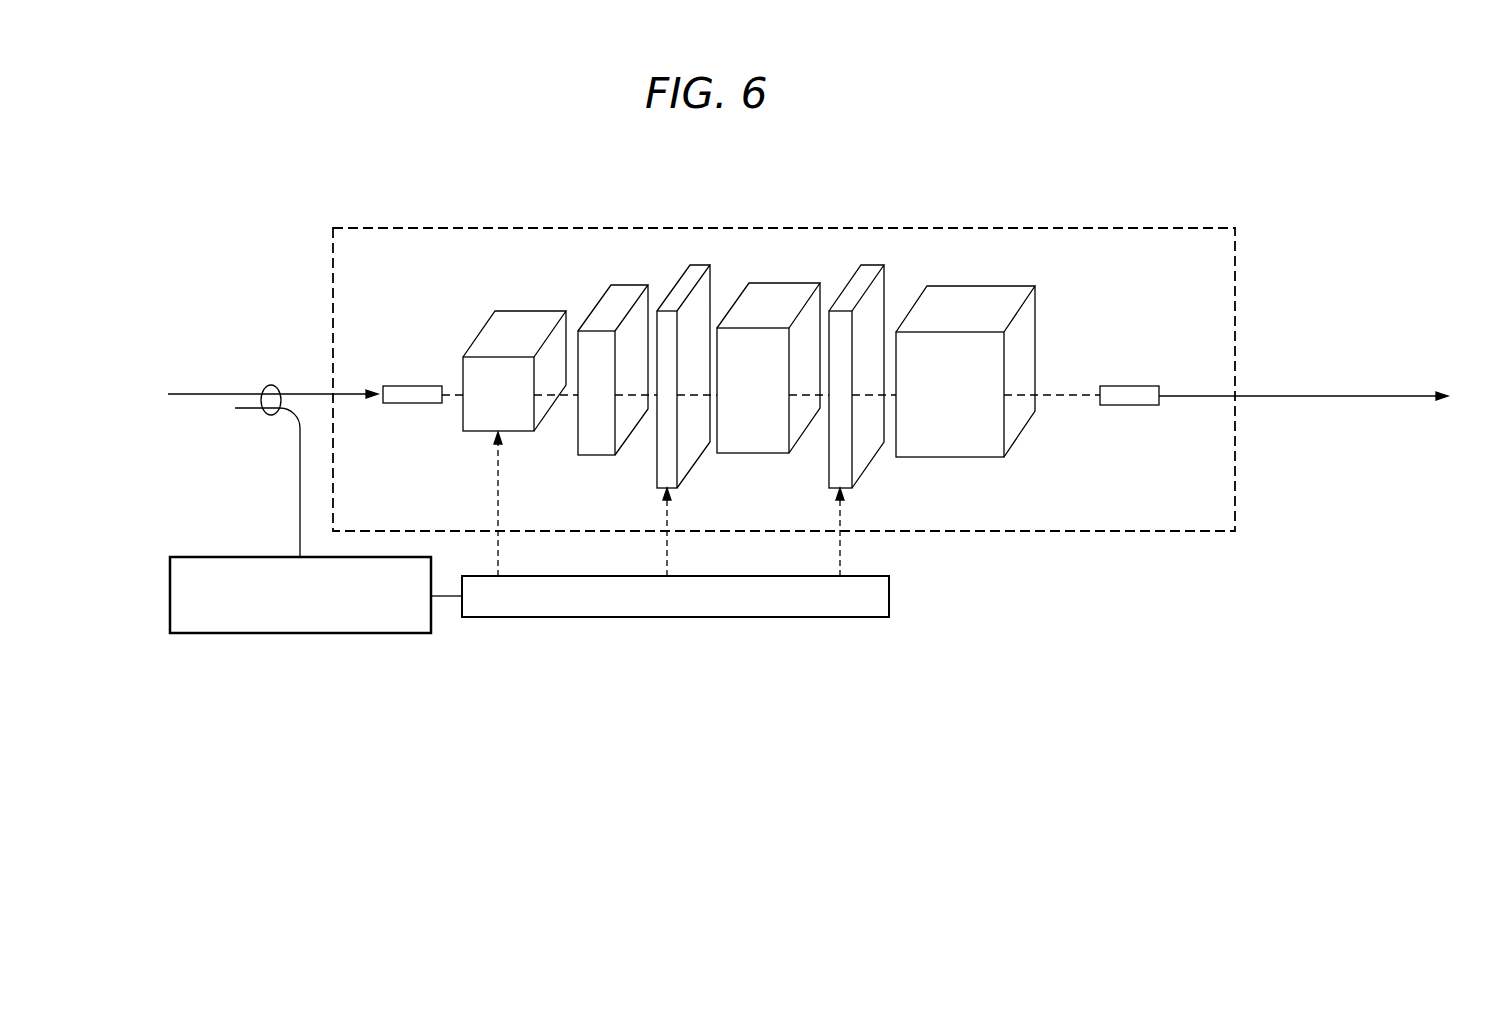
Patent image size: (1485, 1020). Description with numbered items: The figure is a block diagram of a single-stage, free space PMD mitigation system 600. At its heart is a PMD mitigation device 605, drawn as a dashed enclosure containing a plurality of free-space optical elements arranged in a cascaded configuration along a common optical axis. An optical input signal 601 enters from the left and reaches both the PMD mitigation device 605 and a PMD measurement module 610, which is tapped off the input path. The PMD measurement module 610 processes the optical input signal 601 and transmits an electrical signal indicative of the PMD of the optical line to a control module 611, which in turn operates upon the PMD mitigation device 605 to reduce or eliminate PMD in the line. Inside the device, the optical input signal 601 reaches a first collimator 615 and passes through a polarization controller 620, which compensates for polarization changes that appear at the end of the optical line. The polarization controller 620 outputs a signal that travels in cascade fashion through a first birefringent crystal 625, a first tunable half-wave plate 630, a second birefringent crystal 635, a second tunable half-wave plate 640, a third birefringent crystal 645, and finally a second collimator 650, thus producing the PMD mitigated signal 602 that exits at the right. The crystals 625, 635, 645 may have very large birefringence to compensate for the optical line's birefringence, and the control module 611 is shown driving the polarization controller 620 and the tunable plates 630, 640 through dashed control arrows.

The single-stage, free space PMD mitigation system 600 is at (1320, 219).
The optical input signal 601 is at (217, 396).
The PMD mitigated signal 602 is at (1270, 397).
The PMD mitigation device 605 is at (1097, 230).
The PMD measurement module 610 is at (308, 633).
The control module 611 is at (889, 590).
The first collimator 615 is at (427, 403).
The polarization controller 620 is at (493, 432).
The first birefringent crystal 625 is at (606, 455).
The first tunable λ/2 plate 630 is at (661, 489).
The second birefringent crystal 635 is at (781, 454).
The second tunable λ/2 plate 640 is at (884, 266).
The third birefringent crystal 645 is at (1040, 345).
The second collimator 650 is at (1107, 407).